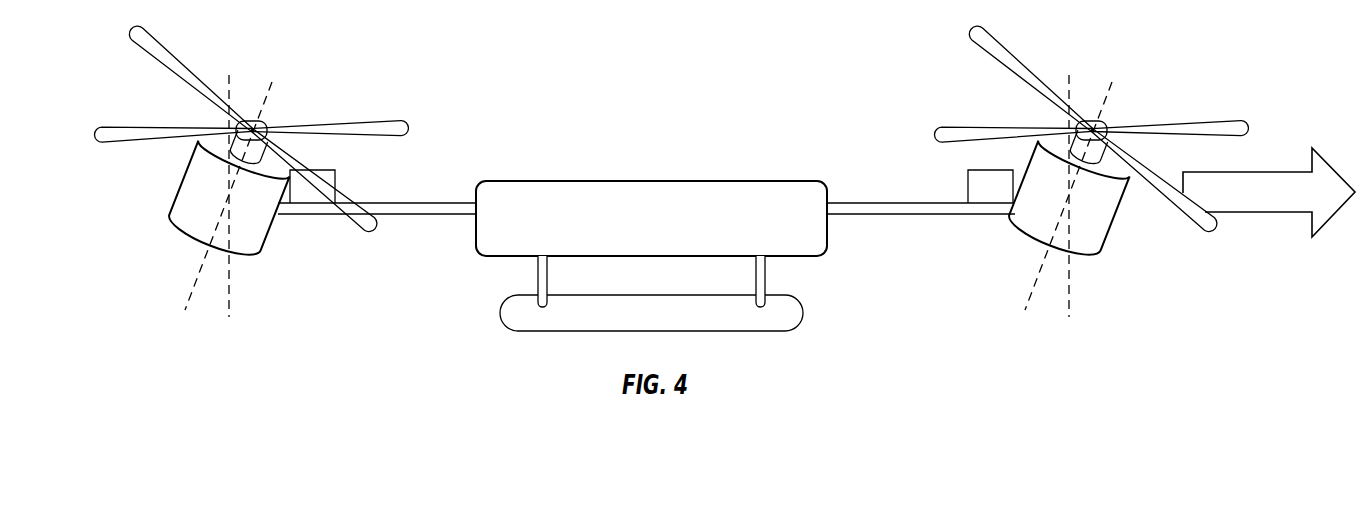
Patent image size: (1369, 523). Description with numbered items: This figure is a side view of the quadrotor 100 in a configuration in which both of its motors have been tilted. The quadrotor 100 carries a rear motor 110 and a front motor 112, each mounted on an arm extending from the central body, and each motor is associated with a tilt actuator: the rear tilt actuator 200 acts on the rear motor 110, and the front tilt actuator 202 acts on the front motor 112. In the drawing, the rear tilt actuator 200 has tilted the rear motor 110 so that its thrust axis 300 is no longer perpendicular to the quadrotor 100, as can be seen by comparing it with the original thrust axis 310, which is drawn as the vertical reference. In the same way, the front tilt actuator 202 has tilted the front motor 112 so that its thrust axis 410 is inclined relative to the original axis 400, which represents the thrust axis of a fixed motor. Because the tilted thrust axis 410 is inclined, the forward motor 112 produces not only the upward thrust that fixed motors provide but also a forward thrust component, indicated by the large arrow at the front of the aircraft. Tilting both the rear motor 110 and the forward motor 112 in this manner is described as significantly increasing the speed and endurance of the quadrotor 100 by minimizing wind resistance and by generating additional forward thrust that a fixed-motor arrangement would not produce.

The quadrotor 100 is at (625, 113).
The rear motor 110 is at (192, 202).
The front motor 112 is at (1098, 239).
The rear tilt actuator 200 is at (335, 173).
The front tilt actuator 202 is at (968, 175).
The thrust axis 300 is at (274, 103).
The original thrust axis 310 is at (236, 88).
The original axis 400 is at (1076, 88).
The thrust axis 410 is at (1114, 103).